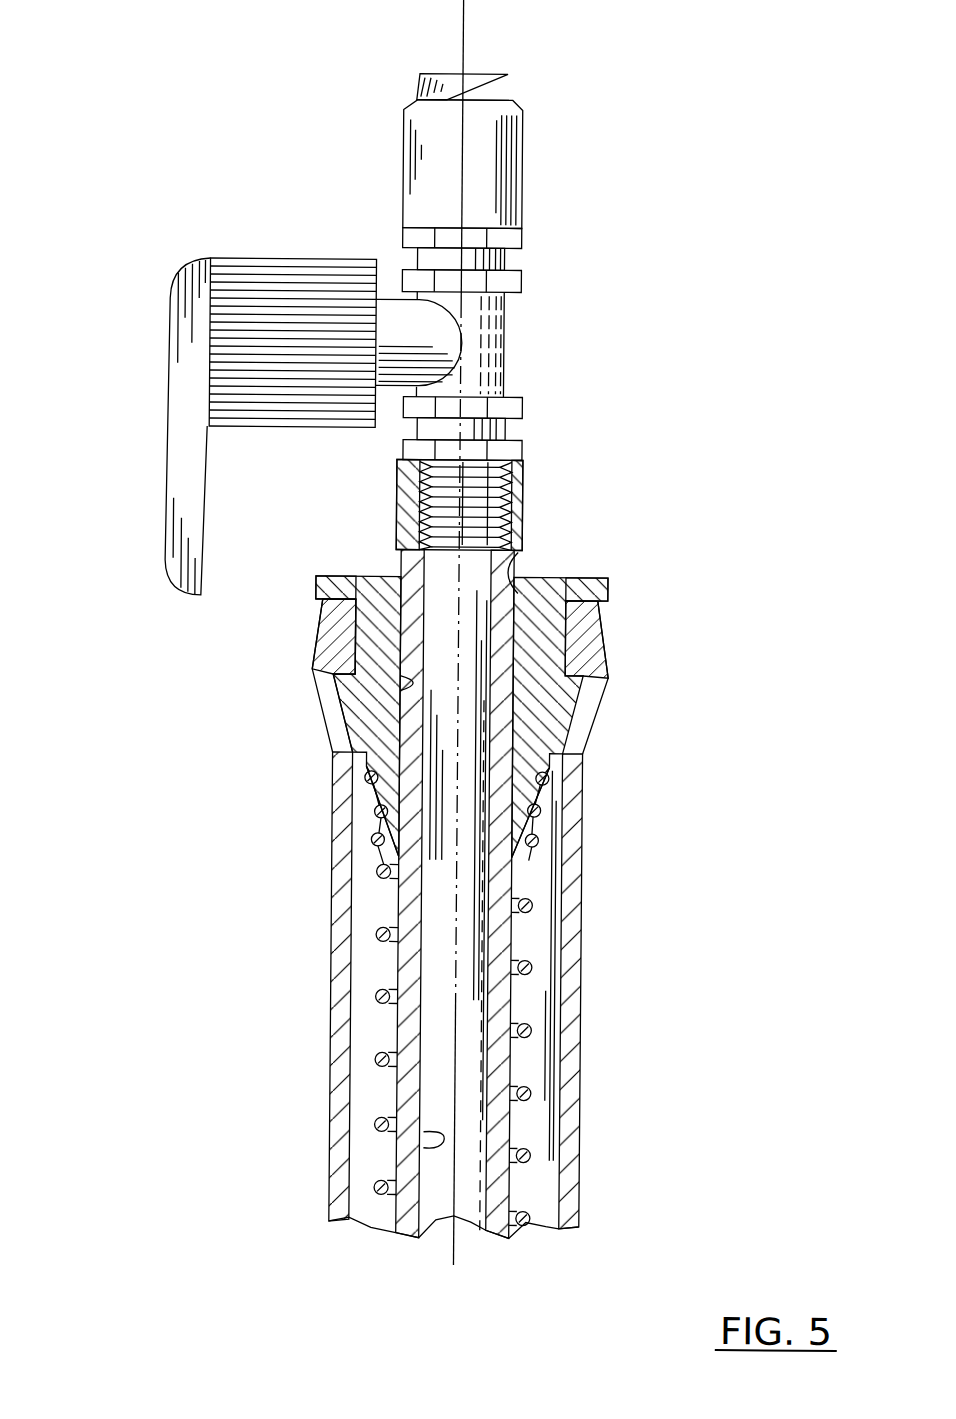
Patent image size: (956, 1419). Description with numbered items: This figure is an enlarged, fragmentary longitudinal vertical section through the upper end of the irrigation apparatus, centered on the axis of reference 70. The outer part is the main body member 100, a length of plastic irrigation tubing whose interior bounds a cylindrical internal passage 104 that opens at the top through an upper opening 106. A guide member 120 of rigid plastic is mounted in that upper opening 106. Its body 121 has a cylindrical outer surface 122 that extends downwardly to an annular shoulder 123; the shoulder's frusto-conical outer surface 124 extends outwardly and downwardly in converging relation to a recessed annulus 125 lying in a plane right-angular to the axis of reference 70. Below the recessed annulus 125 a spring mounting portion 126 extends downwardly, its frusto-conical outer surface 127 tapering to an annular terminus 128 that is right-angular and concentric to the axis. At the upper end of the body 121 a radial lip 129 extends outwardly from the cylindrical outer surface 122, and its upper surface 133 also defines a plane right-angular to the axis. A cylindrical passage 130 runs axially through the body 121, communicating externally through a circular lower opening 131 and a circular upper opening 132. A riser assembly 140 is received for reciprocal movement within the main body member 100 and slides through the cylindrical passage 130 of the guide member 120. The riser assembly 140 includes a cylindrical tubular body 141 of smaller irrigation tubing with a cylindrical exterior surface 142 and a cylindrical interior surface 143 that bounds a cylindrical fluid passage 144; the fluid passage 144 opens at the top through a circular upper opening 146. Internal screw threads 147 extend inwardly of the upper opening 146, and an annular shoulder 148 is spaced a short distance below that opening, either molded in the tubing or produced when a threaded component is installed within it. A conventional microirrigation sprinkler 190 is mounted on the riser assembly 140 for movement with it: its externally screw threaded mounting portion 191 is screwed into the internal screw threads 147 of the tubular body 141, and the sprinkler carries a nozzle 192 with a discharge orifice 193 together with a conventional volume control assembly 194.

The axis of reference 70 is at (459, 24).
The discharge orifice 193 is at (488, 90).
The nozzle 192 is at (493, 172).
The microirrigation sprinkler 190 is at (335, 220).
The volume control assembly 194 is at (165, 356).
The externally screw threaded mounting portion 191 is at (470, 457).
The circular upper opening 146 is at (423, 462).
The internal screw threads 147 is at (497, 462).
The riser assembly 140 is at (530, 492).
The annular shoulder 148 is at (395, 545).
The circular upper opening 132 is at (507, 562).
The guide member 120 is at (572, 560).
The radial lip 129 is at (600, 580).
The upper surface 133 is at (355, 578).
The upper opening 106 is at (575, 652).
The frusto-conical outer surface 124 is at (337, 722).
The annular shoulder 123 is at (360, 705).
The cylindrical outer surface 122 is at (355, 620).
The body 121 is at (365, 648).
The cylindrical passage 130 is at (405, 687).
The recessed annulus 125 is at (365, 780).
The spring mounting portion 126 is at (540, 790).
The frusto-conical outer surface 127 is at (527, 822).
The annular terminus 128 is at (513, 857).
The circular lower opening 131 is at (400, 857).
The main body member 100 is at (335, 822).
The cylindrical internal passage 104 is at (550, 935).
The cylindrical tubular body 141 is at (410, 1078).
The cylindrical exterior surface 142 is at (400, 1011).
The cylindrical fluid passage 144 is at (473, 1005).
The cylindrical interior surface 143 is at (427, 1132).